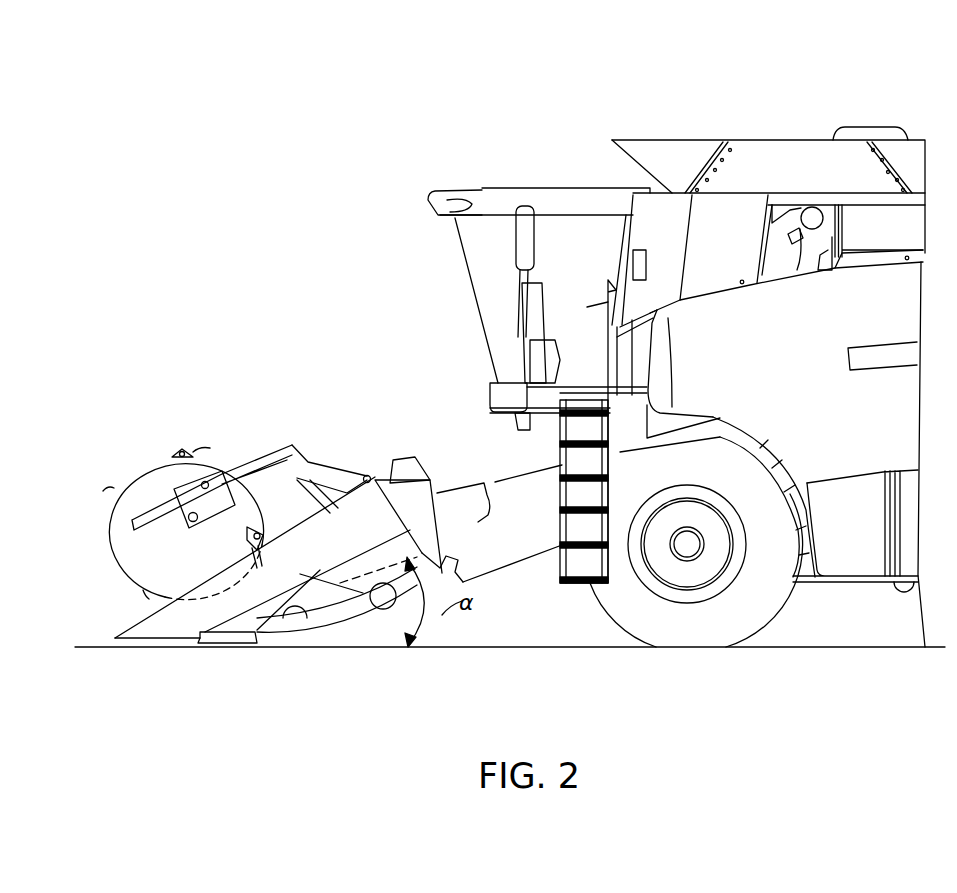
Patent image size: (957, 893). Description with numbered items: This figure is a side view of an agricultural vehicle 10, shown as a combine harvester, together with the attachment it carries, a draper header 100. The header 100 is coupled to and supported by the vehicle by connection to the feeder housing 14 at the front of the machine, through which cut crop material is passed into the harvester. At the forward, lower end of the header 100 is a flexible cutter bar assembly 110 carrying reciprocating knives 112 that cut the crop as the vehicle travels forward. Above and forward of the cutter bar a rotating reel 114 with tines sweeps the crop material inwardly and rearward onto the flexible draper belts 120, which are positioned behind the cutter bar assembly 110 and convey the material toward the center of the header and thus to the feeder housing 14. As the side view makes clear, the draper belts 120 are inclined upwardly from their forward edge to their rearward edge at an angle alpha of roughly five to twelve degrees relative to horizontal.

The agricultural vehicle 10 is at (790, 117).
The feeder housing 14 is at (468, 483).
The header 100 is at (272, 555).
The flexible cutter bar assembly 110 is at (324, 651).
The reciprocating knives 112 is at (208, 643).
The rotating reel 114 is at (180, 451).
The flexible draper belts 120 is at (304, 618).